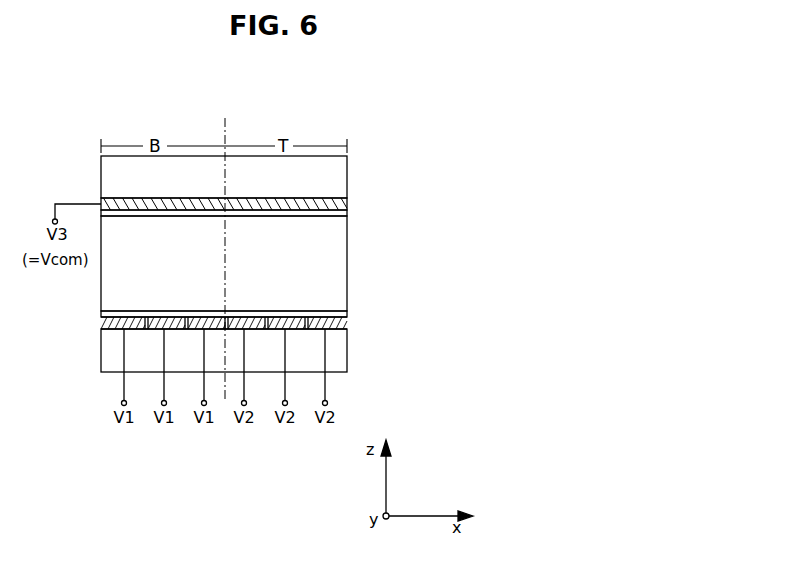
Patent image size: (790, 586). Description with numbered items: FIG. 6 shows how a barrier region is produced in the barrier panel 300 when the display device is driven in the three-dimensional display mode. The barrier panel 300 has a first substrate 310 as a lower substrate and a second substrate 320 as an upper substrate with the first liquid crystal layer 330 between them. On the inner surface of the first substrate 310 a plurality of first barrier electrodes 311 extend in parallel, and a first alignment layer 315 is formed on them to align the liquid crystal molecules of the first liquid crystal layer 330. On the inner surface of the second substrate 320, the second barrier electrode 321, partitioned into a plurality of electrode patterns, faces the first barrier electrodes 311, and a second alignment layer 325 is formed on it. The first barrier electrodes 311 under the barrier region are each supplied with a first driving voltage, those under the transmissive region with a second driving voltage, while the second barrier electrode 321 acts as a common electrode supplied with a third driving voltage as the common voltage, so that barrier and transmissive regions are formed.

The barrier panel 300 is at (286, 316).
The first substrate 310 is at (338, 352).
The first barrier electrodes 311 is at (347, 323).
The first alignment layer 315 is at (347, 314).
The second substrate 320 is at (338, 181).
The second barrier electrode 321 is at (347, 201).
The second alignment layer 325 is at (347, 213).
The first liquid crystal layer 330 is at (338, 270).